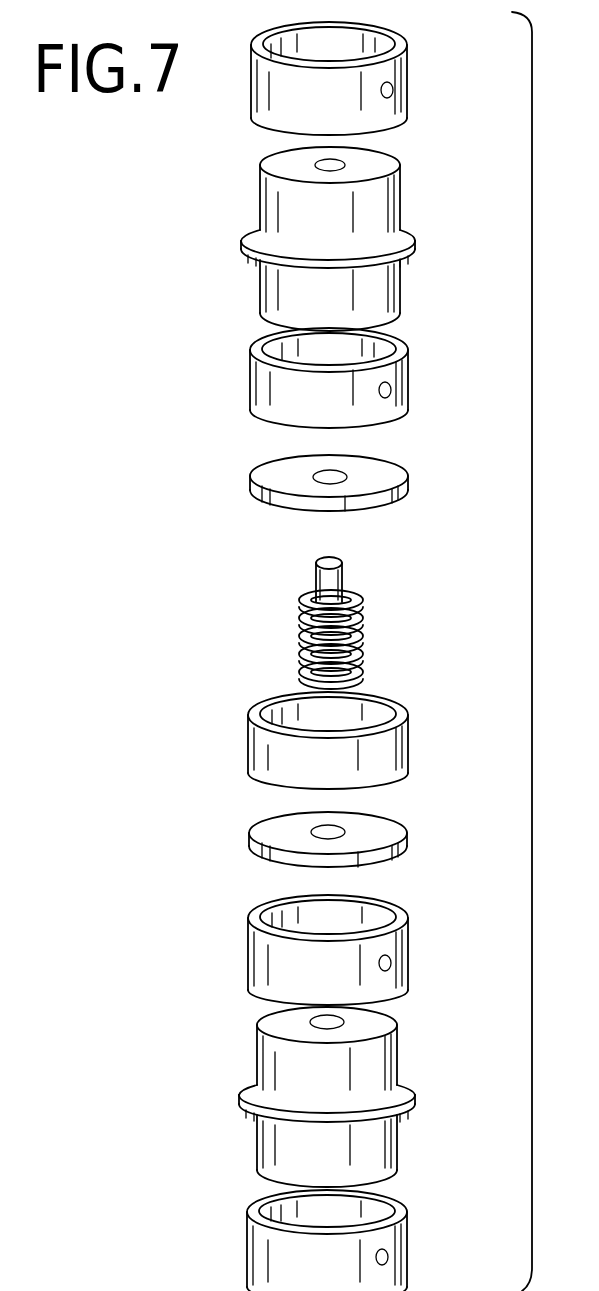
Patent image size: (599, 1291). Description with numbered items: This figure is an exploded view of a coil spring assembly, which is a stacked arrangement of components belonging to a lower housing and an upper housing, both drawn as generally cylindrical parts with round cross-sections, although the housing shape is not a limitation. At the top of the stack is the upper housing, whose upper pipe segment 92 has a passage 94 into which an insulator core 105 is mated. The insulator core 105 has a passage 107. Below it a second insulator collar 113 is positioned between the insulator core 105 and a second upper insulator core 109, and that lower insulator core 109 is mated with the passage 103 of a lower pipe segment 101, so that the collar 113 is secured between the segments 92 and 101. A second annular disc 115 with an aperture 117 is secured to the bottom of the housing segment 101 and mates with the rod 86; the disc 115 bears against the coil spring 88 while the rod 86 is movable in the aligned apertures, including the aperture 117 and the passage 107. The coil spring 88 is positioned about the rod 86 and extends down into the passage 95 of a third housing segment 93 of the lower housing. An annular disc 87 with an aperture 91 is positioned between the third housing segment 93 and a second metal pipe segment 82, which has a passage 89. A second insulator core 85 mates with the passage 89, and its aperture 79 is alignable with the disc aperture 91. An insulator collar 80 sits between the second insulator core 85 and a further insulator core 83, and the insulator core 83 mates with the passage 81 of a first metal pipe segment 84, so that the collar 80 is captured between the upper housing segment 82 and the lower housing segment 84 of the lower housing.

The passage 94 is at (398, 40).
The upper pipe segment 92 is at (411, 84).
The passage 107 is at (335, 163).
The insulator core 105 is at (400, 203).
The second insulator collar 113 is at (414, 239).
The second upper insulator core 109 is at (400, 298).
The passage 103 is at (405, 341).
The lower pipe segment 101 is at (402, 378).
The aperture 117 is at (333, 477).
The second annular disc 115 is at (408, 480).
The rod 86 is at (343, 572).
The coil spring 88 is at (360, 630).
The passage 95 is at (383, 710).
The third housing segment 93 is at (410, 725).
The aperture 91 is at (330, 830).
The annular disc 87 is at (407, 829).
The passage 89 is at (303, 912).
The second metal pipe segment 82 is at (403, 950).
The aperture 79 is at (330, 1022).
The second insulator core 85 is at (385, 1062).
The insulator collar 80 is at (411, 1095).
The insulator core 83 is at (378, 1153).
The passage 81 is at (305, 1212).
The first metal pipe segment 84 is at (407, 1237).